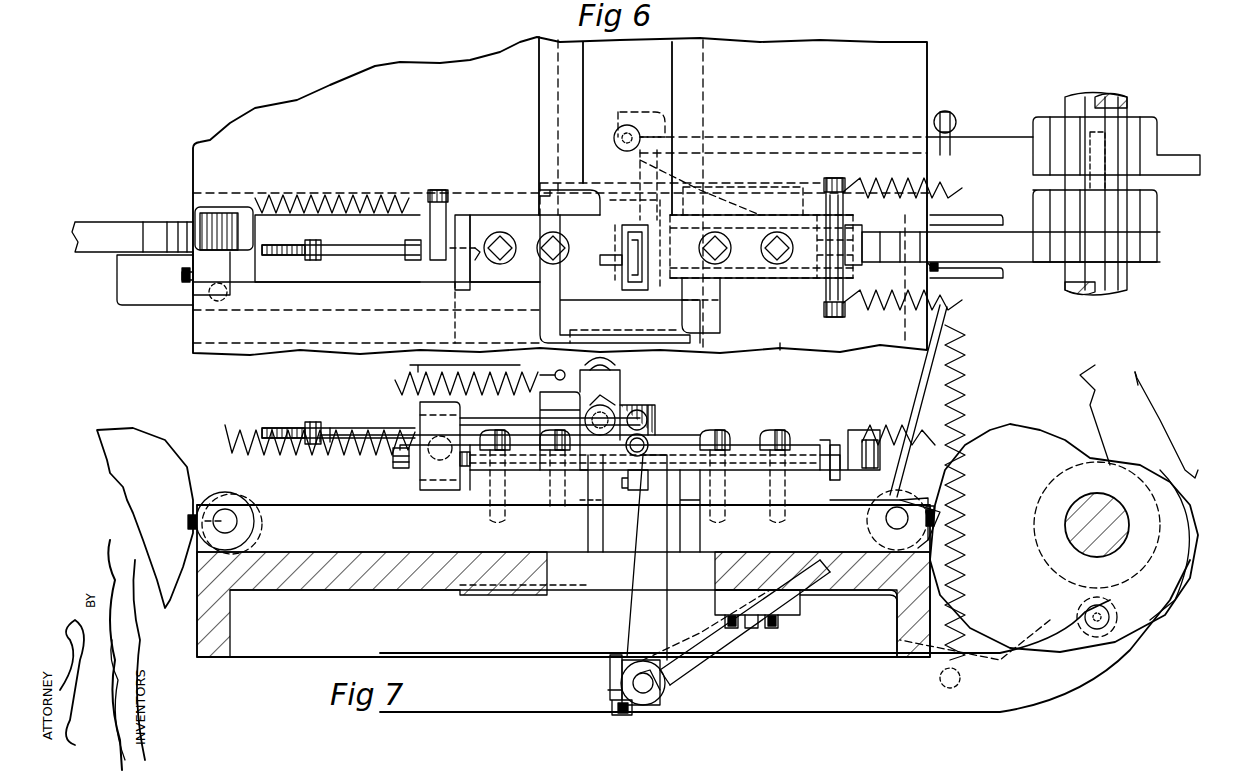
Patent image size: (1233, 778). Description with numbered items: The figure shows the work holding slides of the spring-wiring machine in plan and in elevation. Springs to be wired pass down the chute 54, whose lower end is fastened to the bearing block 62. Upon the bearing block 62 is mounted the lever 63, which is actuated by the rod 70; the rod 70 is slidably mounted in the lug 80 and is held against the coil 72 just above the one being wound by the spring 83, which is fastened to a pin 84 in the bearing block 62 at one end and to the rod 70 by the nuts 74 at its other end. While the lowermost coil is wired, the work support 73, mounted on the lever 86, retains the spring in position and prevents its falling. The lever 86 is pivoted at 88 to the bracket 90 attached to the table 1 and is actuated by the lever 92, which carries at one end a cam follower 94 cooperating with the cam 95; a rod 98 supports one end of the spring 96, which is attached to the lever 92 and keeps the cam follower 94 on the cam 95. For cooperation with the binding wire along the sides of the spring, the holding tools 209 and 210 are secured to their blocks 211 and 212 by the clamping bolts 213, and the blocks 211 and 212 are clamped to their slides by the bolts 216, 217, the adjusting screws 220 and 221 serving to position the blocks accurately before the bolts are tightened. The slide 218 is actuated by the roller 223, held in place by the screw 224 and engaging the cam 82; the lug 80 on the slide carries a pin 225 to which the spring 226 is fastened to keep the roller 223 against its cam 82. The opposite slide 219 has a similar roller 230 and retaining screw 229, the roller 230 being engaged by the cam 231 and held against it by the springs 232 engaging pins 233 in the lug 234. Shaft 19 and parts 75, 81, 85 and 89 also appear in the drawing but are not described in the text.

In FIG. 7, the table 1 is at (804, 580).
In FIG. 6, the shaft 19 is at (1112, 98).
In FIG. 7, the shaft 19 is at (1100, 495).
In FIG. 7, the chute 54 is at (645, 370).
In FIG. 7, the bearing block 62 is at (410, 372).
In FIG. 7, the lever 63 is at (608, 400).
In FIG. 6, the rod 70 is at (363, 262).
In FIG. 7, the rod 70 is at (510, 414).
In FIG. 7, the coil spring 72 is at (655, 405).
In FIG. 6, the work support 73 is at (630, 292).
In FIG. 7, the work support 73 is at (628, 472).
In FIG. 6, the nuts 74 is at (320, 244).
In FIG. 7, the nuts 74 is at (300, 418).
In FIG. 6, the frame member 75 is at (625, 325).
In FIG. 7, the frame member 75 is at (578, 575).
In FIG. 6, the lug 80 is at (448, 278).
In FIG. 7, the lug 80 is at (460, 402).
In FIG. 6, the post 81 is at (462, 225).
In FIG. 7, the post 81 is at (428, 494).
In FIG. 6, the cam 82 is at (117, 230).
In FIG. 7, the cam 82 is at (140, 432).
In FIG. 7, the spring 83 is at (390, 420).
In FIG. 6, the pin 84 is at (538, 348).
In FIG. 6, the threaded rod 85 is at (305, 246).
In FIG. 7, the threaded rod 85 is at (308, 420).
In FIG. 7, the lever 86 is at (635, 628).
In FIG. 6, the pivot 88 is at (622, 104).
In FIG. 7, the pivot 88 is at (655, 690).
In FIG. 7, the bracket 89 is at (612, 670).
In FIG. 7, the bracket 90 is at (705, 625).
In FIG. 6, the lever 92 is at (1010, 138).
In FIG. 7, the lever 92 is at (800, 714).
In FIG. 7, the cam follower 94 is at (1112, 635).
In FIG. 6, the cam 95 is at (1185, 160).
In FIG. 7, the cam 95 is at (1172, 478).
In FIG. 6, the spring 96 is at (956, 120).
In FIG. 7, the spring 96 is at (962, 405).
In FIG. 7, the rod 98 is at (925, 395).
In FIG. 6, the holding tool 209 is at (596, 232).
In FIG. 7, the holding tool 209 is at (578, 425).
In FIG. 6, the holding tool 210 is at (690, 280).
In FIG. 7, the holding tool 210 is at (672, 445).
In FIG. 6, the block 211 is at (512, 282).
In FIG. 7, the block 211 is at (575, 470).
In FIG. 6, the block 212 is at (775, 290).
In FIG. 7, the block 212 is at (698, 470).
In FIG. 6, the clamping bolts 213 is at (553, 256).
In FIG. 7, the clamping bolts 213 is at (560, 460).
In FIG. 6, the bolt 216 is at (500, 255).
In FIG. 7, the bolt 216 is at (492, 430).
In FIG. 6, the bolt 217 is at (790, 238).
In FIG. 7, the bolt 217 is at (776, 428).
In FIG. 6, the slide 218 is at (266, 275).
In FIG. 7, the slide 218 is at (325, 512).
In FIG. 6, the slide 219 is at (912, 268).
In FIG. 7, the slide 219 is at (840, 585).
In FIG. 6, the adjusting screw 220 is at (408, 246).
In FIG. 7, the adjusting screw 220 is at (392, 452).
In FIG. 6, the adjusting screw 221 is at (865, 232).
In FIG. 7, the adjusting screw 221 is at (880, 480).
In FIG. 6, the roller 223 is at (212, 220).
In FIG. 7, the roller 223 is at (212, 496).
In FIG. 6, the screw 224 is at (182, 275).
In FIG. 7, the screw 224 is at (185, 520).
In FIG. 6, the pin 225 is at (430, 188).
In FIG. 7, the pin 225 is at (460, 460).
In FIG. 6, the spring 226 is at (300, 195).
In FIG. 7, the spring 226 is at (258, 440).
In FIG. 6, the retaining screw 229 is at (938, 270).
In FIG. 7, the retaining screw 229 is at (945, 528).
In FIG. 6, the roller 230 is at (930, 247).
In FIG. 7, the roller 230 is at (940, 497).
In FIG. 6, the cam 231 is at (1038, 260).
In FIG. 7, the cam 231 is at (1015, 438).
In FIG. 6, the springs 232 is at (962, 185).
In FIG. 7, the springs 232 is at (905, 428).
In FIG. 6, the pins 233 is at (815, 182).
In FIG. 7, the pins 233 is at (865, 440).
In FIG. 6, the lug 234 is at (790, 280).
In FIG. 7, the lug 234 is at (845, 418).